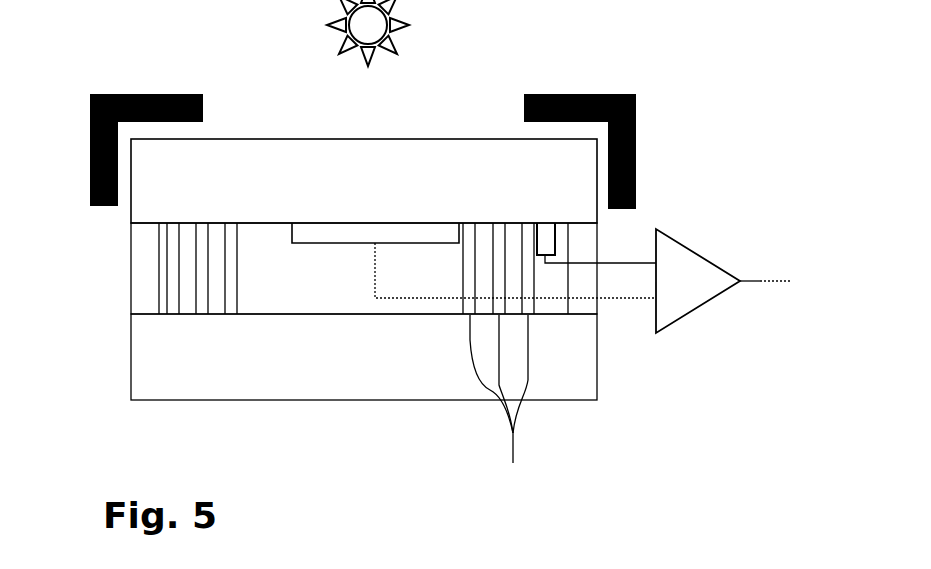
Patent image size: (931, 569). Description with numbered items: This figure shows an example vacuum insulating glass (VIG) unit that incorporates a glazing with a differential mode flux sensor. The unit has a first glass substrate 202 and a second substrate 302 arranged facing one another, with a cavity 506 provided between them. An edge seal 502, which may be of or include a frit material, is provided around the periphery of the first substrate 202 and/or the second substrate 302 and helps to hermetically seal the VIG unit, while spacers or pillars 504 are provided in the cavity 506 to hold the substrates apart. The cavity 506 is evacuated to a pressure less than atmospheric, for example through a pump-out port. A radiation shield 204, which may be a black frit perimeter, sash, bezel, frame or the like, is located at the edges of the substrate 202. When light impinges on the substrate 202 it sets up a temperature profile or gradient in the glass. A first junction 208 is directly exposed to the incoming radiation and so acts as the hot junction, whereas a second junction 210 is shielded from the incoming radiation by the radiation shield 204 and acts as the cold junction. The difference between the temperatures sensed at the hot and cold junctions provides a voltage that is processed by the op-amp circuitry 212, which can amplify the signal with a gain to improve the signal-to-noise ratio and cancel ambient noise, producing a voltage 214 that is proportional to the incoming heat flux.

The glass substrate 202 is at (364, 139).
The radiation shield 204 is at (637, 108).
The first junction 208 is at (312, 244).
The second junction 210 is at (557, 242).
The op-amp circuitry 212 is at (676, 239).
The voltage 214 is at (773, 284).
The second substrate 302 is at (364, 403).
The edge seal 502 is at (131, 270).
The spacers or pillars 504 is at (501, 407).
The cavity 506 is at (488, 273).